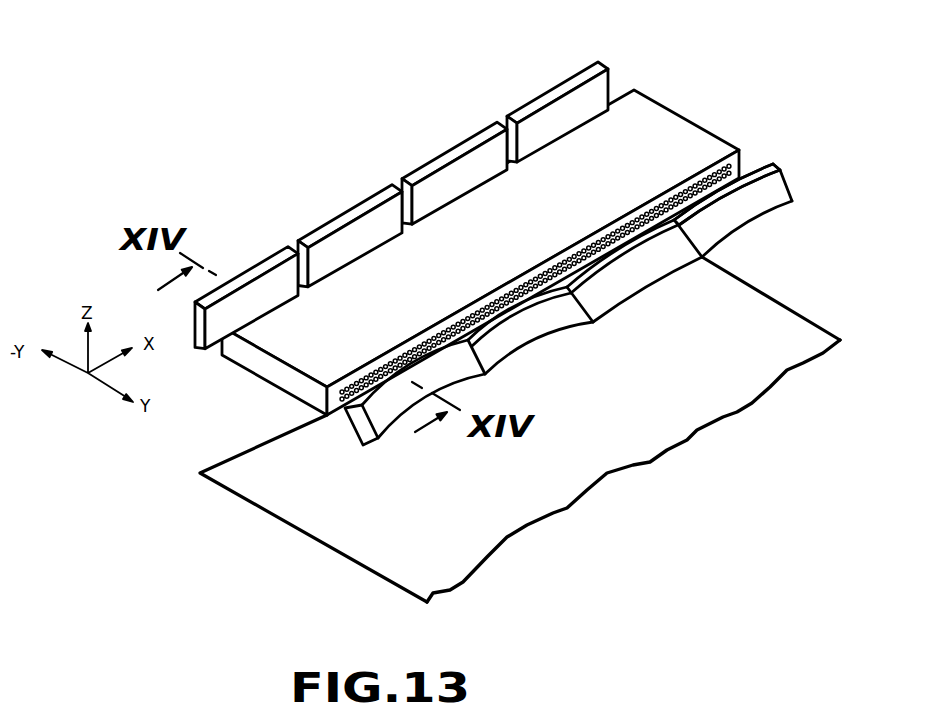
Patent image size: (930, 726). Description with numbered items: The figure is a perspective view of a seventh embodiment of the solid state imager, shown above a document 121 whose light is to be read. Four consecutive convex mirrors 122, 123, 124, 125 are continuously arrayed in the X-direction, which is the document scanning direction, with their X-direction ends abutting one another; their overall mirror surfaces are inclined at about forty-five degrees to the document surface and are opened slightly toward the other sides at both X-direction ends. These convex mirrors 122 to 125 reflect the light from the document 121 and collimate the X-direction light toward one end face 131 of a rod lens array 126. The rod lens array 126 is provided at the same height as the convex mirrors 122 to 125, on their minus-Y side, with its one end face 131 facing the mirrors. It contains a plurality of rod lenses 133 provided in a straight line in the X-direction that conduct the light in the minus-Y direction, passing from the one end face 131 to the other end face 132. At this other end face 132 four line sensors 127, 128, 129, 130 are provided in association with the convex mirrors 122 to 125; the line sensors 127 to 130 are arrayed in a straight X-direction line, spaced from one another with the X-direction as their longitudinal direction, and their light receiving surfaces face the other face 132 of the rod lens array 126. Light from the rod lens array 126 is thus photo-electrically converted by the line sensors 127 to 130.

The document 121 is at (373, 562).
The convex mirror 122 is at (393, 413).
The convex mirror 123 is at (525, 335).
The convex mirror 124 is at (635, 273).
The convex mirror 125 is at (747, 212).
The rod lens array 126 is at (273, 373).
The line sensor 127 is at (255, 272).
The line sensor 128 is at (345, 217).
The line sensor 129 is at (447, 160).
The line sensor 130 is at (545, 100).
The one end face of the rod lens array 131 is at (738, 167).
The other end face of the rod lens array 132 is at (622, 90).
The rod lens 133 is at (343, 413).